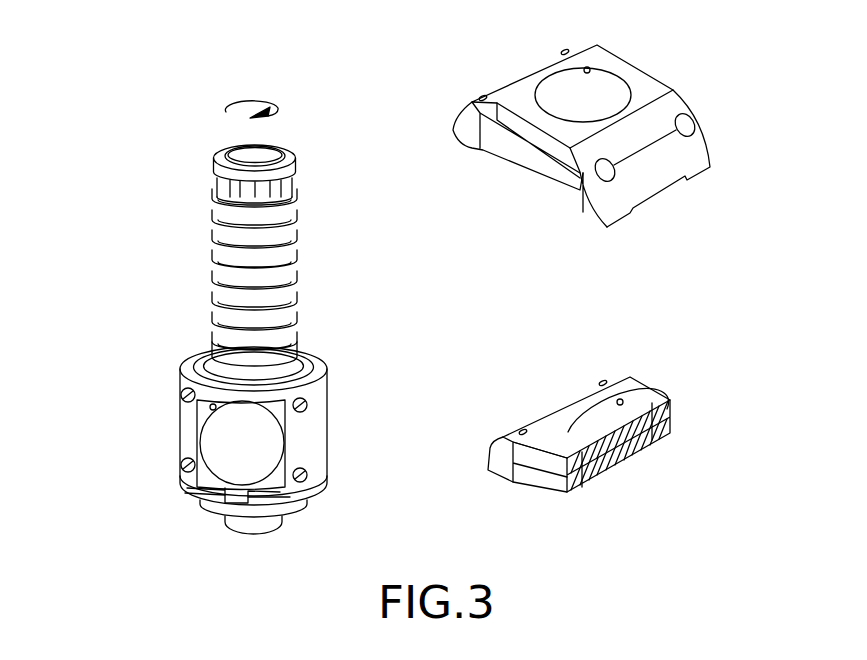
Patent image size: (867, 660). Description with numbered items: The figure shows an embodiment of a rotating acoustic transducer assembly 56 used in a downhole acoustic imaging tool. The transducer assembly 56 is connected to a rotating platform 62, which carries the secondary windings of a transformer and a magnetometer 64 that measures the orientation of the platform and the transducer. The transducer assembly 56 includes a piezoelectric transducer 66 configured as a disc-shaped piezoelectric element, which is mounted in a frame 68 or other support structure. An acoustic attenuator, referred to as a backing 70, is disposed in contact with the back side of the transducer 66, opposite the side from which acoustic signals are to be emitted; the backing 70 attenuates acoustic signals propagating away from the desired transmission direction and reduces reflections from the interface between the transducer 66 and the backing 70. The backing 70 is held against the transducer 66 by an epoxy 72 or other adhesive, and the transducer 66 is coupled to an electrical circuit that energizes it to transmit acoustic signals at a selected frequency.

The transducer assembly 56 is at (126, 371).
The rotating platform 62 is at (270, 100).
The magnetometer 64 is at (293, 512).
The piezoelectric transducer 66 is at (277, 440).
The frame 68 is at (698, 158).
The backing 70 is at (627, 462).
The epoxy 72 is at (525, 158).